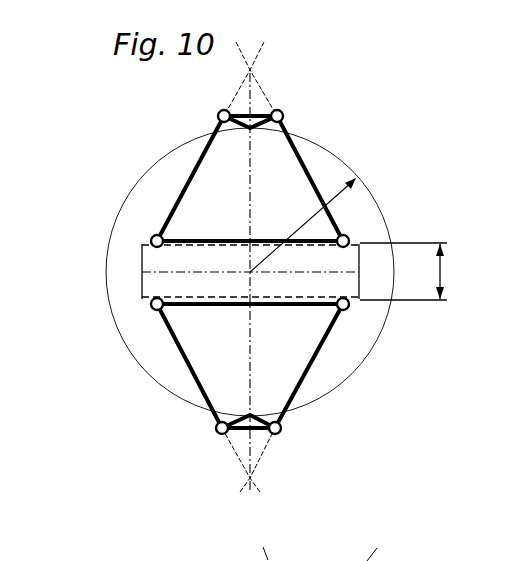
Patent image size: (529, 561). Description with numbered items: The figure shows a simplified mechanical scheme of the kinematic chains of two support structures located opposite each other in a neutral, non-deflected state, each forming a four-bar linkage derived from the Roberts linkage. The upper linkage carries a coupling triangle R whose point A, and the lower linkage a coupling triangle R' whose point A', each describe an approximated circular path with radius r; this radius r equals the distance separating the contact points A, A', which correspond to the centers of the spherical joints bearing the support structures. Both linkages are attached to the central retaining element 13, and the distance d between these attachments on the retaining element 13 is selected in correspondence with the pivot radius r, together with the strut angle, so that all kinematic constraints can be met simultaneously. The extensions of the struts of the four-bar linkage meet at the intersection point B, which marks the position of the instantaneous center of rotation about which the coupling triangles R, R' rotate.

The retaining element 13 is at (141, 258).
The contact point A is at (342, 131).
The contact point A' is at (303, 418).
The coupling triangle R is at (294, 99).
The coupling triangle R' is at (292, 455).
The intersection point B is at (250, 70).
The radius r is at (359, 177).
The distance d is at (421, 271).